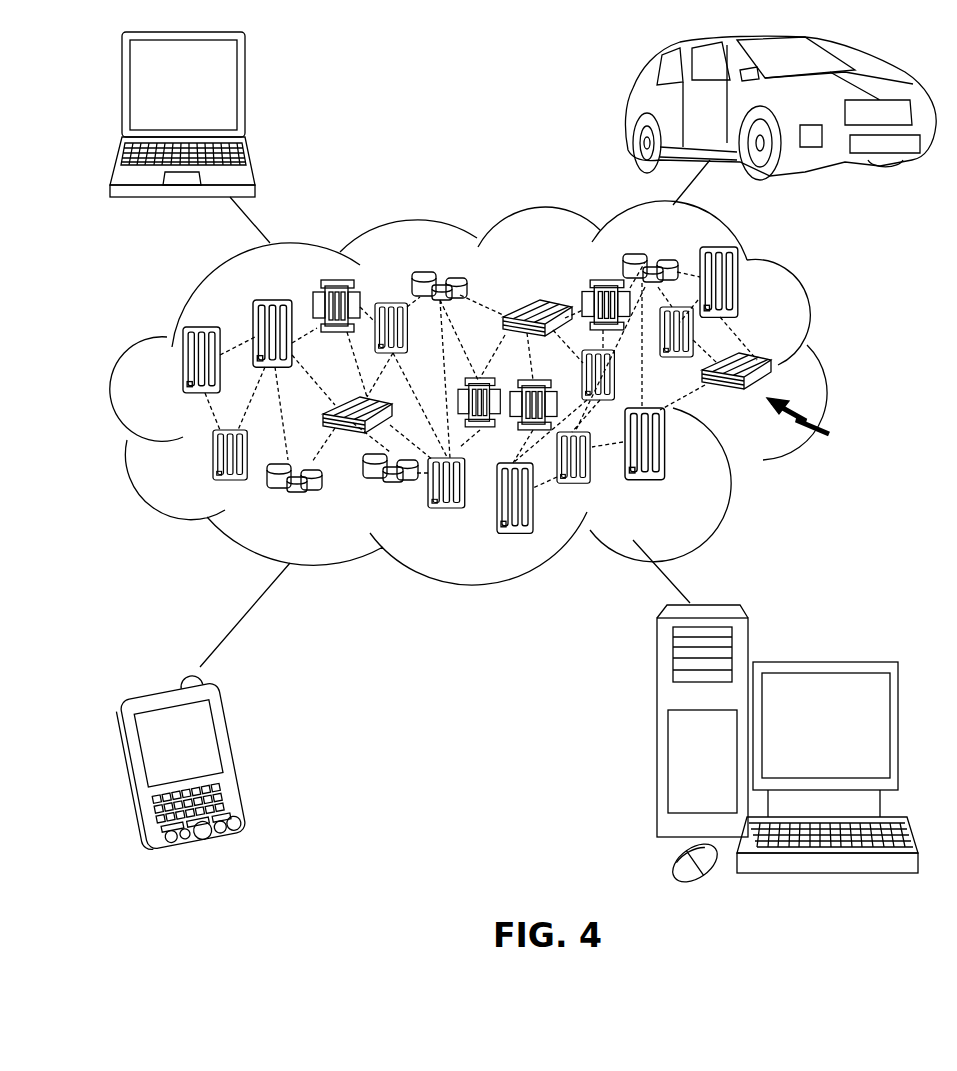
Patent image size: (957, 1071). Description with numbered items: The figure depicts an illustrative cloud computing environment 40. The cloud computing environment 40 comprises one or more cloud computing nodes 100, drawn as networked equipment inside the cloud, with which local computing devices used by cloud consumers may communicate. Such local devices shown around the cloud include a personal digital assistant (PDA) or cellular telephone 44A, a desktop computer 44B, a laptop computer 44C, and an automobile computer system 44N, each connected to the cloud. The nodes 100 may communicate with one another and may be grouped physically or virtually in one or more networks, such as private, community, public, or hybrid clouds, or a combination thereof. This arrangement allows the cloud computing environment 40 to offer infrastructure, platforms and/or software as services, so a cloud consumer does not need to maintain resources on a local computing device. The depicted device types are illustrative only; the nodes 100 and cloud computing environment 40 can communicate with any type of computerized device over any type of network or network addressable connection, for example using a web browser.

The cloud computing environment 40 is at (825, 363).
The personal digital assistant (PDA) or cellular telephone 44A is at (233, 757).
The desktop computer 44B is at (822, 660).
The laptop computer 44C is at (247, 92).
The automobile computer system 44N is at (630, 110).
The cloud computing nodes 100 is at (823, 420).